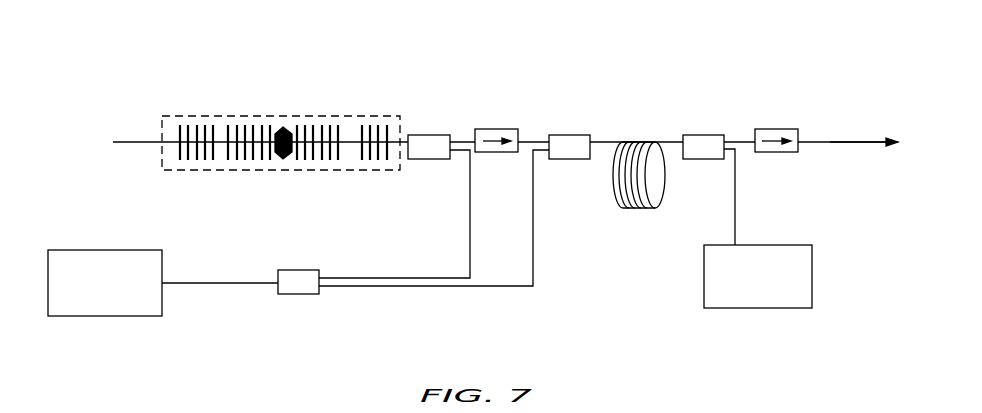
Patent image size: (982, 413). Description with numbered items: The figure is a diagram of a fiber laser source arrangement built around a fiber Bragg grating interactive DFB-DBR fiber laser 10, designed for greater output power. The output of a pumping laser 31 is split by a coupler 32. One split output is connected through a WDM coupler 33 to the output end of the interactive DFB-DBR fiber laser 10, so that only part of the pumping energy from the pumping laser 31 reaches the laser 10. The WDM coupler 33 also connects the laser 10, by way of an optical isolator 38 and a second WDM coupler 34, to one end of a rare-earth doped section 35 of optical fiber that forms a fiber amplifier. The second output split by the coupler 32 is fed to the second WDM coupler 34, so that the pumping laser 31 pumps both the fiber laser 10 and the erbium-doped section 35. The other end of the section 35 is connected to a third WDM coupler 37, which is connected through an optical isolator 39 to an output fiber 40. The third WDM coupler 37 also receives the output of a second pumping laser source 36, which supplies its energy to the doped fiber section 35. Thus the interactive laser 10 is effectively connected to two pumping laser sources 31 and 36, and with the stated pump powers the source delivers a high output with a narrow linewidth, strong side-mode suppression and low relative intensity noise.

The interactive DFB-DBR fiber laser 10 is at (272, 166).
The pumping laser 31 is at (100, 255).
The coupler 32 is at (295, 290).
The WDM coupler 33 is at (435, 141).
The second WDM coupler 34 is at (570, 140).
The rare-earth doped section 35 is at (632, 210).
The second pumping laser source 36 is at (765, 308).
The third WDM coupler 37 is at (700, 140).
The optical isolator 38 is at (490, 133).
The optical isolator 39 is at (778, 133).
The output fiber 40 is at (847, 141).